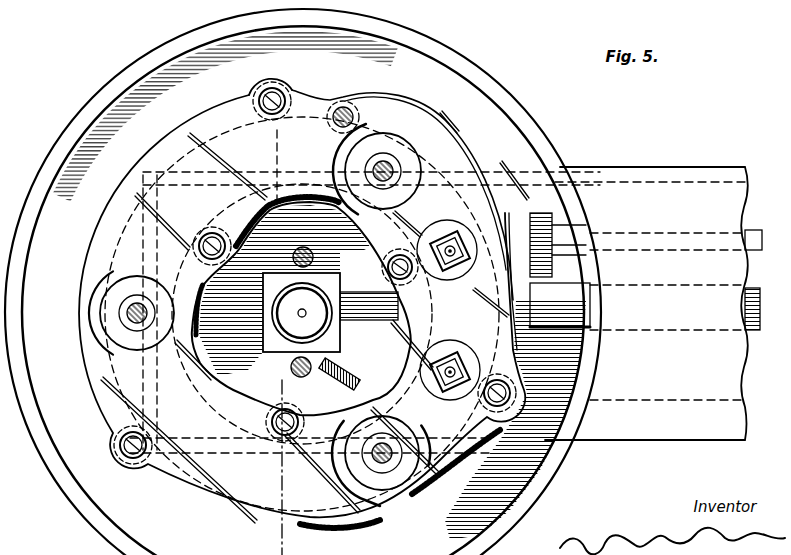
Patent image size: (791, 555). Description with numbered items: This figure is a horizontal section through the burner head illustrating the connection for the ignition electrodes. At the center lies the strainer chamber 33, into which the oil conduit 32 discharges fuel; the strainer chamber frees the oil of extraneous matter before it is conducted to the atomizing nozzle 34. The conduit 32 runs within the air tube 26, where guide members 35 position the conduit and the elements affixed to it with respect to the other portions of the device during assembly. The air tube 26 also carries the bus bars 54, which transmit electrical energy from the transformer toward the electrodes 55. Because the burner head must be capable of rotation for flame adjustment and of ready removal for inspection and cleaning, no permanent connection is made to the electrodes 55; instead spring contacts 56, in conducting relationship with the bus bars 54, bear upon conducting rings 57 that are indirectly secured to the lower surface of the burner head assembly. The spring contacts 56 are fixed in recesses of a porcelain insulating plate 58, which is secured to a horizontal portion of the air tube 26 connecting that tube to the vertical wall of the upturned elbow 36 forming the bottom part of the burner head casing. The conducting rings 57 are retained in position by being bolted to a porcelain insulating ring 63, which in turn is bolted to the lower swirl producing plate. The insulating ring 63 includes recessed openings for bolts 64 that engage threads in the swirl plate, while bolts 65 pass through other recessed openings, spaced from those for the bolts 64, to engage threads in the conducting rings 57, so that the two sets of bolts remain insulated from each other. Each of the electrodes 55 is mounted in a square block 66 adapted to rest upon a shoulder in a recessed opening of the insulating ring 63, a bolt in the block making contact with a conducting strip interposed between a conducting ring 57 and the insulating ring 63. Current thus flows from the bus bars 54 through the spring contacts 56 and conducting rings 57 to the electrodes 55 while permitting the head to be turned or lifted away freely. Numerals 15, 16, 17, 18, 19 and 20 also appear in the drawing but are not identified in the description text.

The bottom part of burner head casing 36 is at (485, 73).
The insulating plate 58 is at (500, 157).
The insulating ring 63 is at (107, 243).
The bolts 64 is at (127, 313).
The bolts 65 is at (246, 95).
The screw 15 is at (540, 405).
The screw 16 is at (388, 268).
The roller 20 is at (444, 421).
The lever rod 17 is at (399, 485).
The conducting rings 57 is at (208, 352).
The strainer chamber 33 is at (268, 348).
The atomizing nozzle 34 is at (289, 290).
The pin 18 is at (300, 252).
The pin 19 is at (295, 376).
The guide members 35 is at (350, 366).
The electrodes 55 is at (450, 265).
The square block 66 is at (463, 343).
The spring contacts 56 is at (548, 278).
The air tube 26 is at (657, 442).
The bus bars 54 is at (756, 232).
The conduit 32 is at (754, 331).